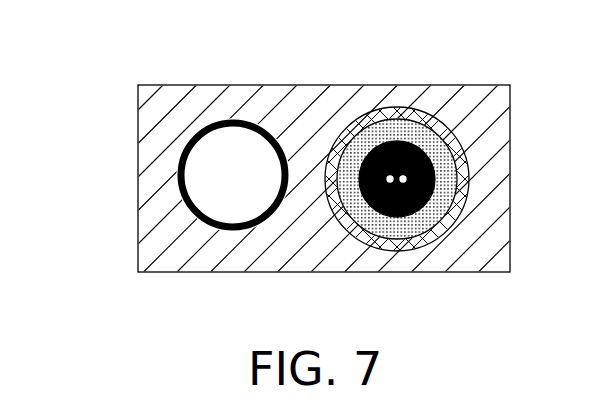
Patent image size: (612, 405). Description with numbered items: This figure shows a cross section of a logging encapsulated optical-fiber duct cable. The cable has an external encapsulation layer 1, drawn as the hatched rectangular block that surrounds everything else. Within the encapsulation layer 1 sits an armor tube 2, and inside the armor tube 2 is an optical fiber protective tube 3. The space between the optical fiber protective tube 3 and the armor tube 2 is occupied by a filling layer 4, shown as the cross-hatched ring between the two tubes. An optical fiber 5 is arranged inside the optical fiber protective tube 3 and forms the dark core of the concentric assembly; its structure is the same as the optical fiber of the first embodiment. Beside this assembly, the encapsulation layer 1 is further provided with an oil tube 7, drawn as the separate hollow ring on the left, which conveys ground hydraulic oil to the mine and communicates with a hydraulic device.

The encapsulation layer 1 is at (255, 92).
The armor tube 2 is at (363, 117).
The optical fiber protective tube 3 is at (404, 124).
The filling layer 4 is at (440, 120).
The optical fiber 5 is at (420, 185).
The oil tube 7 is at (232, 175).